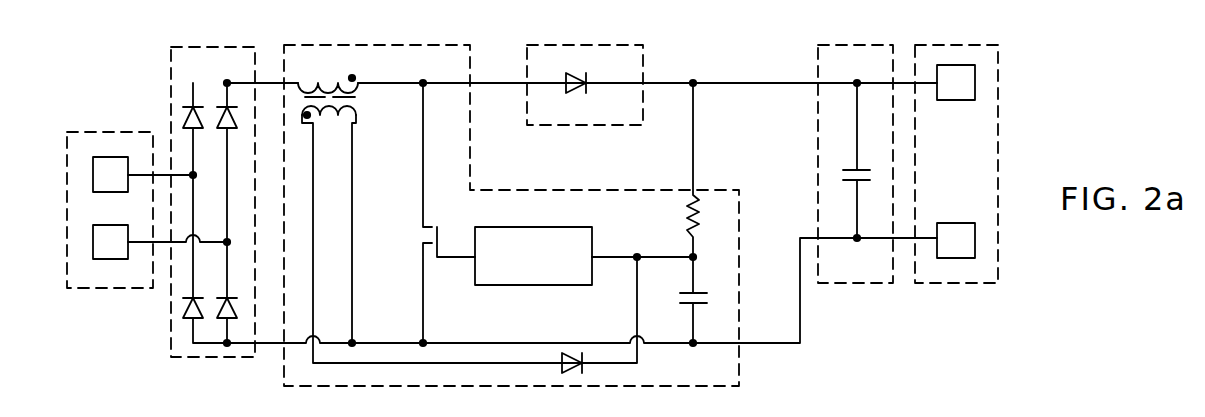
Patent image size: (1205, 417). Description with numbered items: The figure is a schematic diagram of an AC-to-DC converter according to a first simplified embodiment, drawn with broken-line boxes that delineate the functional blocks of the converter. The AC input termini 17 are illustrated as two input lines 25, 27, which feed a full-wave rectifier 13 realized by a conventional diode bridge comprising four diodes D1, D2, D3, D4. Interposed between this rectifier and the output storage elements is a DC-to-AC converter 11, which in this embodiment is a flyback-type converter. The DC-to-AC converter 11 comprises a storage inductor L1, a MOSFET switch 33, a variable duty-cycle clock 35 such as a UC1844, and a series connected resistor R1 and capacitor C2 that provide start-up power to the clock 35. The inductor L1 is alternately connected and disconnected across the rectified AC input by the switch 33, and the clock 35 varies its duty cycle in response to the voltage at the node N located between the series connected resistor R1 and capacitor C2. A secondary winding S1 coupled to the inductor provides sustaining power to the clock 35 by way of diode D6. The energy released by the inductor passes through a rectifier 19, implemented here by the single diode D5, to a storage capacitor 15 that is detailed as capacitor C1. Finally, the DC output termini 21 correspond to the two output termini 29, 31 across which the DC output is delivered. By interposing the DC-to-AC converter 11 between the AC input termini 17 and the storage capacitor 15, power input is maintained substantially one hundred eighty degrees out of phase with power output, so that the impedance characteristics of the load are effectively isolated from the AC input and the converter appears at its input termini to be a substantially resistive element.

The DC-to-AC converter 11 is at (395, 45).
The full-wave rectifier 13 is at (205, 47).
The storage capacitor 15 is at (836, 45).
The AC input termini 17 is at (112, 132).
The rectifier 19 is at (592, 45).
The DC output termini 21 is at (951, 45).
The input line 25 is at (127, 192).
The input line 27 is at (118, 259).
The output terminus 29 is at (963, 101).
The output terminus 31 is at (966, 213).
The MOSFET switch 33 is at (433, 238).
The variable duty-cycle clock 35 is at (540, 285).
The diode D1 is at (202, 132).
The diode D2 is at (235, 132).
The diode D3 is at (196, 298).
The diode D4 is at (226, 318).
The diode D5 is at (592, 78).
The diode D6 is at (559, 367).
The storage inductor L1 is at (328, 80).
The secondary winding S1 is at (469, 234).
The resistor R1 is at (672, 188).
The capacitor C1 is at (861, 160).
The capacitor C2 is at (680, 318).
The node N is at (696, 258).